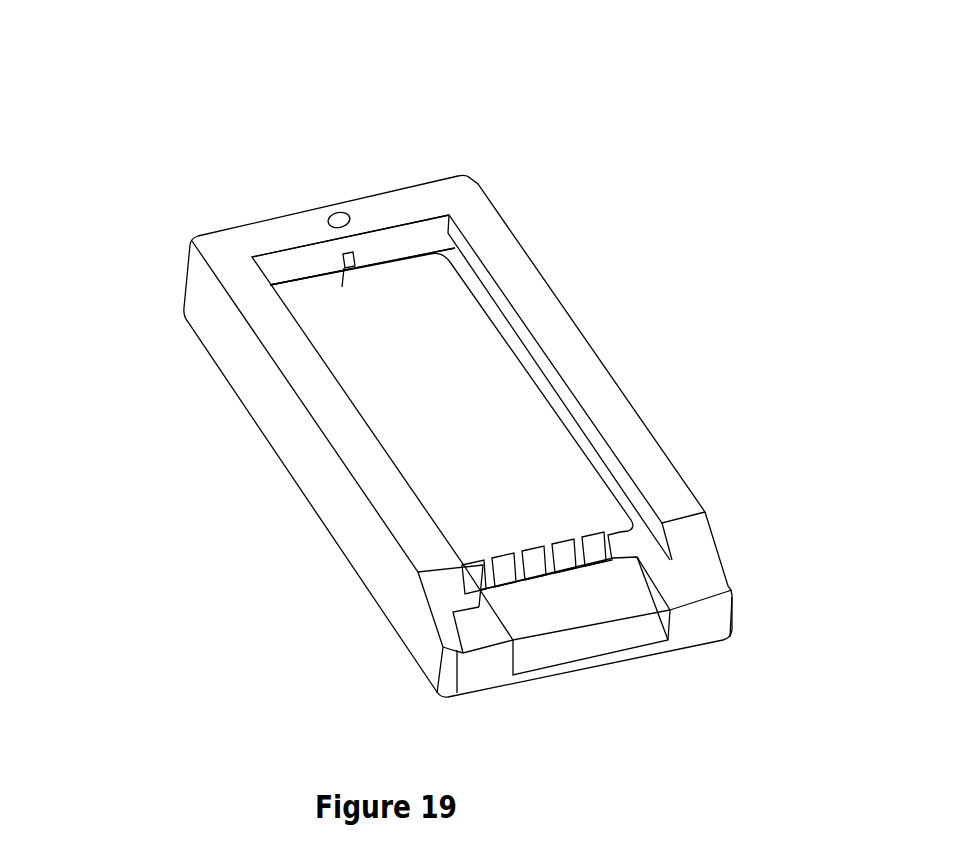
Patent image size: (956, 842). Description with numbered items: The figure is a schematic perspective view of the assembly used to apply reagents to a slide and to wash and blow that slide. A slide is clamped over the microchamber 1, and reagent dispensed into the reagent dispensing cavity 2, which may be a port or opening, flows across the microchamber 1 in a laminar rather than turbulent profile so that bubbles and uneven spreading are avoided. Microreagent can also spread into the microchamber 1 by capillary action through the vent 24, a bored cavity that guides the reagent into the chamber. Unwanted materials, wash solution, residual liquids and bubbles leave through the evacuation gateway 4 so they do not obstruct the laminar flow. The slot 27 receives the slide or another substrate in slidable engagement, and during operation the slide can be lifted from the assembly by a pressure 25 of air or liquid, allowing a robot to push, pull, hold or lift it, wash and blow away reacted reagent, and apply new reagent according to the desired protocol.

The microchamber 1 is at (512, 401).
The reagent dispensing cavity 2 is at (351, 205).
The evacuation gateway 4 is at (611, 601).
The vent 24 is at (341, 273).
The pressure 25 is at (399, 370).
The slot 27 is at (473, 626).